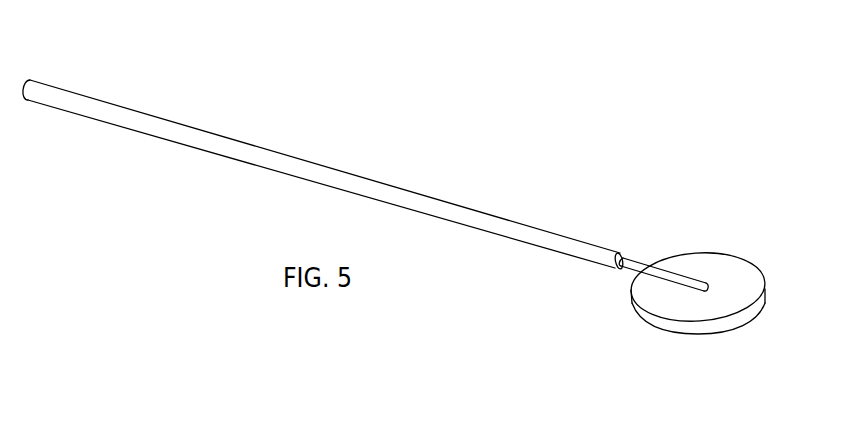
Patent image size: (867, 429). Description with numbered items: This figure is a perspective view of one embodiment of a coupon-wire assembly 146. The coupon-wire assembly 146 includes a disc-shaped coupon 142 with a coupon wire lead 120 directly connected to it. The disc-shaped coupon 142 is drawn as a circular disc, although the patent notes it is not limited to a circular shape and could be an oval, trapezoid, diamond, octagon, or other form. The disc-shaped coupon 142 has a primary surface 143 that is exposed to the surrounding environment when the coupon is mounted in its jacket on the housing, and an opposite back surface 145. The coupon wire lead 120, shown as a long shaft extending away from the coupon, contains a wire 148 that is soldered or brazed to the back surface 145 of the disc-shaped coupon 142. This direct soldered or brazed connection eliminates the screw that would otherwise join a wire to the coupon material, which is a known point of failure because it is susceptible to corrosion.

The coupon-wire assembly 146 is at (350, 110).
The coupon wire lead 120 is at (480, 220).
The wire 148 is at (630, 265).
The back surface 145 is at (725, 273).
The disc-shaped coupon 142 is at (713, 325).
The primary surface 143 is at (683, 338).